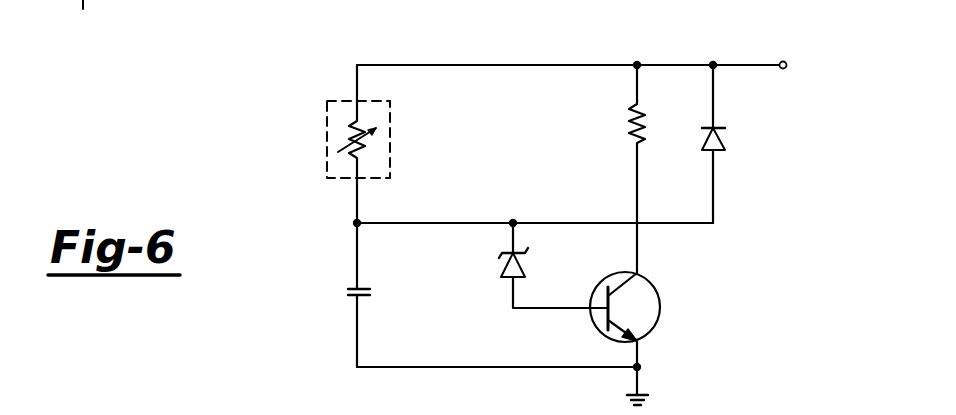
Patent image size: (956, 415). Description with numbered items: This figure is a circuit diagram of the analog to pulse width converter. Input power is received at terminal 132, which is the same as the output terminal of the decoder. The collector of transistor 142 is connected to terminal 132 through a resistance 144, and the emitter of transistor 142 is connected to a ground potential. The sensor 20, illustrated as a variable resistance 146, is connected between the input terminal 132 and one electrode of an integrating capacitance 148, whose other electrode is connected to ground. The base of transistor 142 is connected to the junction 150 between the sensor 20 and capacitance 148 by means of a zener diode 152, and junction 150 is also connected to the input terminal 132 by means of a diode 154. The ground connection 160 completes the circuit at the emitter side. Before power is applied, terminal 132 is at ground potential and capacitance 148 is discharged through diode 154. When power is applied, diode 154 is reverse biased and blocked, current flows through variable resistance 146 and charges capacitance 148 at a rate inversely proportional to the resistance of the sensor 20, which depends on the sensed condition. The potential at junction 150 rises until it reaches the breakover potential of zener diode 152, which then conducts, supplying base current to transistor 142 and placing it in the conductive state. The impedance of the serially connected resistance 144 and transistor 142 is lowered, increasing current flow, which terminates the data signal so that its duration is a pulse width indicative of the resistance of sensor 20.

The sensor 20 is at (352, 98).
The terminal 132 is at (783, 60).
The transistor 142 is at (661, 301).
The resistance 144 is at (630, 117).
The variable resistance 146 is at (363, 160).
The integrating capacitance 148 is at (364, 297).
The junction 150 is at (360, 226).
The zener diode 152 is at (527, 258).
The diode 154 is at (727, 140).
The ground line 160 is at (502, 390).